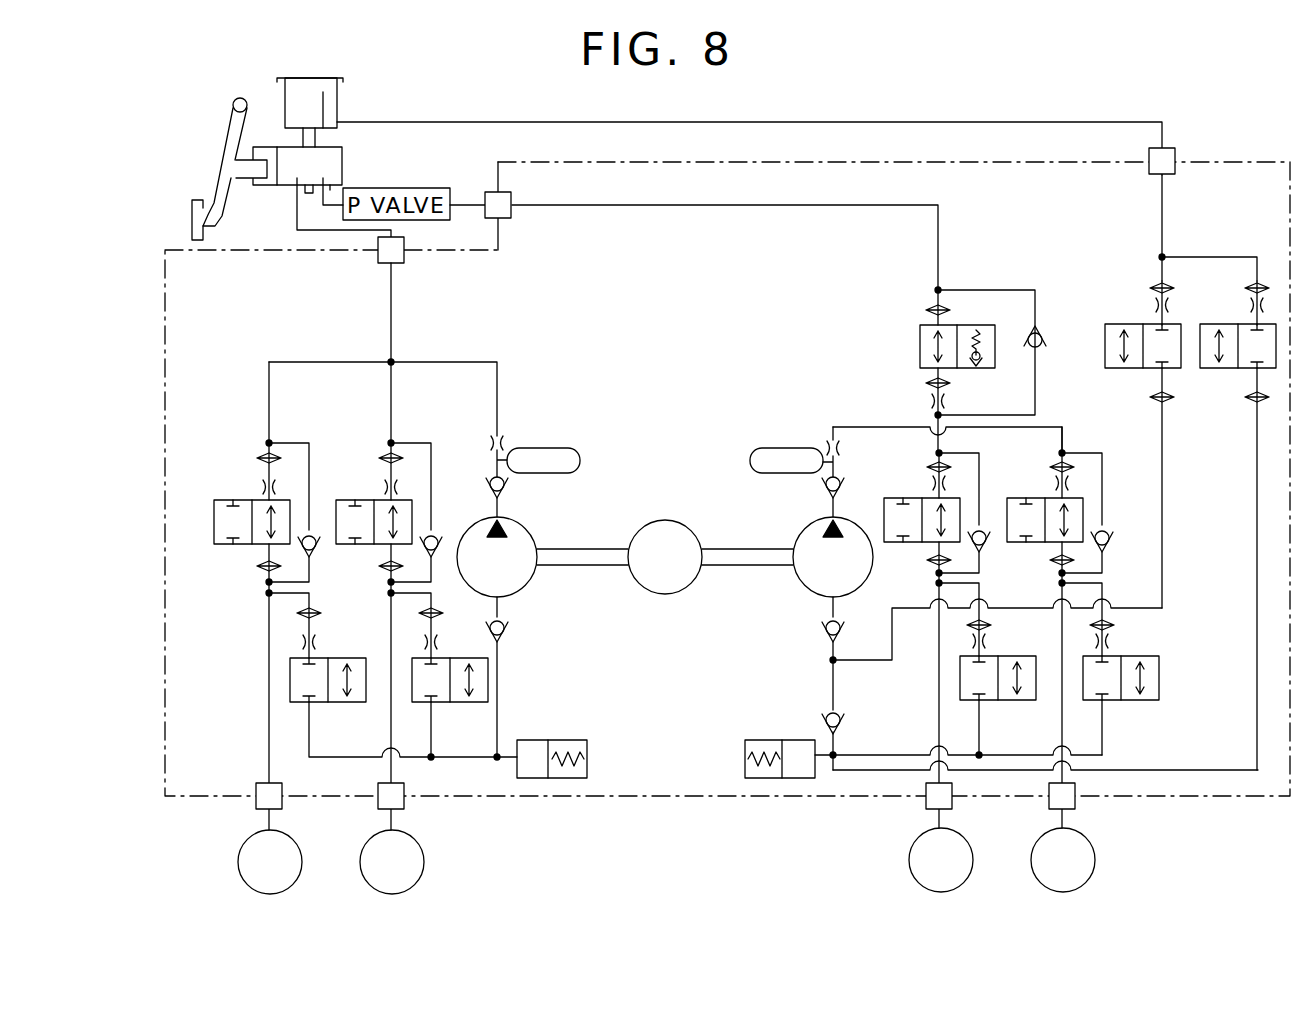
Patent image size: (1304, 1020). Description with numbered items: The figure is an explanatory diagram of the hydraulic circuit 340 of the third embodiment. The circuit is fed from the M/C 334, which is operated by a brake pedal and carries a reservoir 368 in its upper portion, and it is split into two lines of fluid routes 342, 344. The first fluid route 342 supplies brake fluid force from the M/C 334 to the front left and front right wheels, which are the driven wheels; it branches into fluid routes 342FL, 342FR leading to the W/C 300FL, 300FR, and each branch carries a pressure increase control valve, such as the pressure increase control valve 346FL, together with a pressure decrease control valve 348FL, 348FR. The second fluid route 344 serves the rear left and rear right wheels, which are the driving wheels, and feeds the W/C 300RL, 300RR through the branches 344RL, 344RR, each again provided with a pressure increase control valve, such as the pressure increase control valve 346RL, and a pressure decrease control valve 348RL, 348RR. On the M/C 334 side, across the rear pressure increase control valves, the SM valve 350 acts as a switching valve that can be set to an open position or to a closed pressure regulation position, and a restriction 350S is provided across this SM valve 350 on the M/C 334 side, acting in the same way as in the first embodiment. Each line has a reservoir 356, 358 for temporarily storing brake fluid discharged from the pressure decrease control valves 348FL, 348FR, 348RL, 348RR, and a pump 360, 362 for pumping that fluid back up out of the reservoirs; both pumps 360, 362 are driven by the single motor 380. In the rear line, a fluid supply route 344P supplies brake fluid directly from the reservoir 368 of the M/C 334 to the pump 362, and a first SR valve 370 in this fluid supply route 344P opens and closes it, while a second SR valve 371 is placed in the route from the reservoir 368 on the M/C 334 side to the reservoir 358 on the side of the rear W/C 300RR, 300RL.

The reservoir 368 is at (335, 76).
The M/C 334 is at (342, 163).
The fluid supply route 344P is at (1030, 118).
The hydraulic circuit 340 is at (1197, 156).
The restriction 350S is at (845, 209).
The SM valve 350 is at (920, 328).
The fluid route 344 is at (1060, 299).
The first SR valve 370 is at (1110, 325).
The second SR valve 371 is at (1212, 325).
The fluid route 342 is at (524, 405).
The fluid route 342FR is at (268, 386).
The fluid route 342FL is at (391, 388).
The pressure increase control valve 346FL is at (338, 545).
The pressure increase control valve 346RL is at (1012, 497).
The pressure decrease control valve 348FR is at (290, 683).
The pressure decrease control valve 348FL is at (490, 683).
The pressure decrease control valve 348RR is at (960, 683).
The pressure decrease control valve 348RL is at (1125, 658).
The rear right brake passage 344RR is at (936, 440).
The rear left brake passage 344RL is at (1066, 440).
The reservoir 356 is at (533, 740).
The reservoir 358 is at (773, 729).
The pump 360 is at (522, 533).
The pump 362 is at (806, 533).
The motor 380 is at (661, 518).
The W/C 300FR is at (248, 846).
The W/C 300FL is at (421, 846).
The W/C 300RR is at (918, 843).
The W/C 300RL is at (1092, 843).